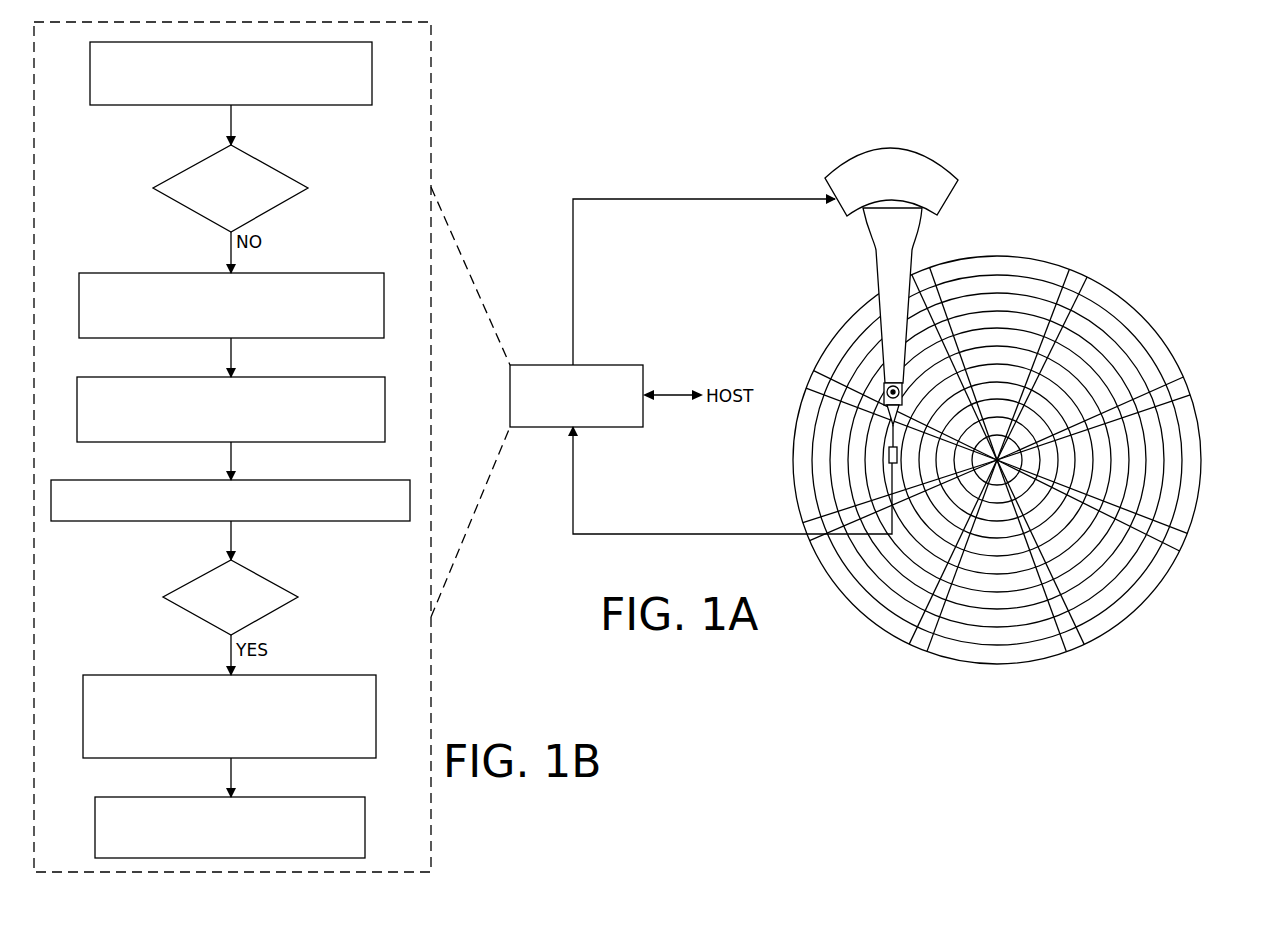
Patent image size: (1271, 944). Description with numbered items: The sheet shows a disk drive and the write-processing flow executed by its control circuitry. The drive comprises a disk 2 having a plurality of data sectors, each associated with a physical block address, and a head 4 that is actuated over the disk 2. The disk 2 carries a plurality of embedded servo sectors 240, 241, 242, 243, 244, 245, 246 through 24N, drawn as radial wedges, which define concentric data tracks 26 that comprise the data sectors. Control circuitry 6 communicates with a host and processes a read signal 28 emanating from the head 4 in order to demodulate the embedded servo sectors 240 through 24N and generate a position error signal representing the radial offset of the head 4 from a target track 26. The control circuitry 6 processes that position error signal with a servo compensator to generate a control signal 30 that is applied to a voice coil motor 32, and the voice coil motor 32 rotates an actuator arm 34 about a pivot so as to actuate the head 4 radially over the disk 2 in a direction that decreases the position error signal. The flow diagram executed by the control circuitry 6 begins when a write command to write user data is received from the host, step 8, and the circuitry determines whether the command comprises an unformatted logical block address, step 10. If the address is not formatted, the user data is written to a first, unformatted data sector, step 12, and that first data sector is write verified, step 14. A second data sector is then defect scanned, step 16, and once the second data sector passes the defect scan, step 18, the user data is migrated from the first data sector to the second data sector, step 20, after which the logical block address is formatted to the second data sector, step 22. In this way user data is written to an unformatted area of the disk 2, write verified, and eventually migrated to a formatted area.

In FIG. 1A, the disk 2 is at (1140, 296).
In FIG. 1A, the head 4 is at (886, 459).
In FIG. 1A, the control circuitry 6 is at (610, 365).
In FIG. 1B, the receive write command step 8 is at (324, 106).
In FIG. 1B, the LBA formatted decision step 10 is at (276, 214).
In FIG. 1B, the write user data to first data sector step 12 is at (333, 339).
In FIG. 1B, the write verify first data sector step 14 is at (331, 443).
In FIG. 1B, the defect scan second data sector step 16 is at (343, 522).
In FIG. 1B, the pass decision step 18 is at (275, 615).
In FIG. 1B, the migrate user data step 20 is at (331, 759).
In FIG. 1B, the format LBA step 22 is at (150, 797).
In FIG. 1A, the embedded servo sector 24N is at (922, 270).
In FIG. 1A, the embedded servo sector 240 is at (1078, 273).
In FIG. 1A, the embedded servo sector 241 is at (1188, 386).
In FIG. 1A, the embedded servo sector 242 is at (1184, 542).
In FIG. 1A, the embedded servo sector 243 is at (1075, 648).
In FIG. 1A, the embedded servo sector 244 is at (918, 648).
In FIG. 1A, the embedded servo sector 245 is at (806, 532).
In FIG. 1A, the embedded servo sector 246 is at (810, 379).
In FIG. 1A, the data track 26 is at (1000, 262).
In FIG. 1A, the read signal 28 is at (700, 534).
In FIG. 1A, the control signal 30 is at (573, 268).
In FIG. 1A, the voice coil motor 32 is at (847, 212).
In FIG. 1A, the actuator arm 34 is at (875, 280).